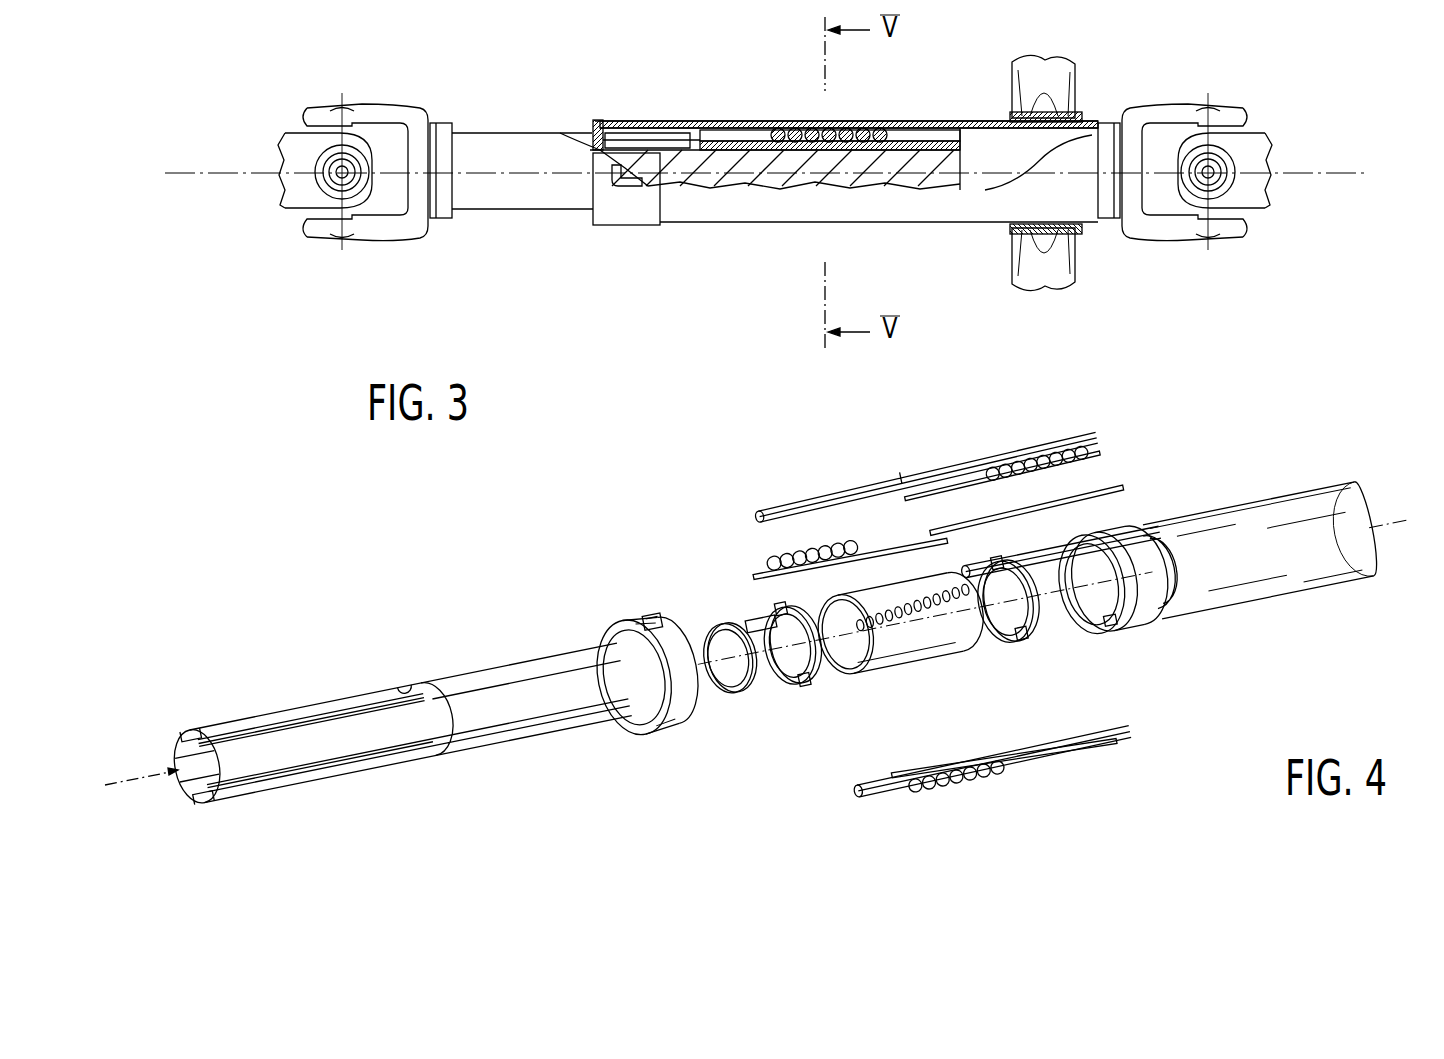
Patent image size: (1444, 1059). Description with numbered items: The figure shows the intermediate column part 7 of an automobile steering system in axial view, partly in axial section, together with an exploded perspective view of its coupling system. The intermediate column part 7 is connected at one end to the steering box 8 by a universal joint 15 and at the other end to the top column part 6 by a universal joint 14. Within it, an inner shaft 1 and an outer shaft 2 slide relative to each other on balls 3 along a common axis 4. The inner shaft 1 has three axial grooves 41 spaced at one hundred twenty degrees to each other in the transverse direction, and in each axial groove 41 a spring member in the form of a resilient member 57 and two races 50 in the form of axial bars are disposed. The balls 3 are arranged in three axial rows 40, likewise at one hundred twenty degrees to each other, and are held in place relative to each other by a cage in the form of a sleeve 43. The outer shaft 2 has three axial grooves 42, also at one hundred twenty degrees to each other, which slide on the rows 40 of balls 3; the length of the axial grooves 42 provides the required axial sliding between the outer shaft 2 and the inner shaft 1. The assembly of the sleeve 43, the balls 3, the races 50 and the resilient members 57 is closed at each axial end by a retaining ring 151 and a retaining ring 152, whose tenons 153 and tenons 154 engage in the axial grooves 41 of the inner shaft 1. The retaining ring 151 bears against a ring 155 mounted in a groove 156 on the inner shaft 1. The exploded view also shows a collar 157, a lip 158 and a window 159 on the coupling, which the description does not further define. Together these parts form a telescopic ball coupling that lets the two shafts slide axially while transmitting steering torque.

In FIG. 3, the inner shaft 1 is at (515, 128).
In FIG. 4, the inner shaft 1 is at (338, 755).
In FIG. 3, the outer shaft 2 is at (736, 128).
In FIG. 4, the outer shaft 2 is at (1305, 510).
In FIG. 3, the balls 3 is at (881, 130).
In FIG. 4, the balls 3 is at (1029, 465).
In FIG. 3, the common axis 4 is at (514, 190).
In FIG. 4, the common axis 4 is at (130, 787).
In FIG. 3, the top column part 6 is at (1381, 159).
In FIG. 3, the intermediate column part 7 is at (646, 92).
In FIG. 3, the steering box 8 is at (221, 158).
In FIG. 3, the universal joint 14 is at (1242, 198).
In FIG. 3, the universal joint 15 is at (312, 196).
In FIG. 4, the axial rows 40 is at (1100, 459).
In FIG. 4, the axial grooves 41 is at (290, 728).
In FIG. 4, the axial grooves 42 is at (1105, 625).
In FIG. 4, the sleeve 43 is at (935, 620).
In FIG. 4, the races 50 is at (969, 463).
In FIG. 4, the resilient member 57 is at (1135, 490).
In FIG. 4, the retaining ring 151 is at (790, 680).
In FIG. 4, the retaining ring 152 is at (1003, 645).
In FIG. 4, the tenons 153 is at (800, 675).
In FIG. 4, the tenons 154 is at (1025, 637).
In FIG. 4, the ring 155 is at (729, 695).
In FIG. 4, the groove 156 is at (406, 688).
In FIG. 3, the collar 157 is at (631, 226).
In FIG. 4, the collar 157 is at (626, 742).
In FIG. 4, the lip 158 is at (1165, 622).
In FIG. 4, the window 159 is at (655, 628).